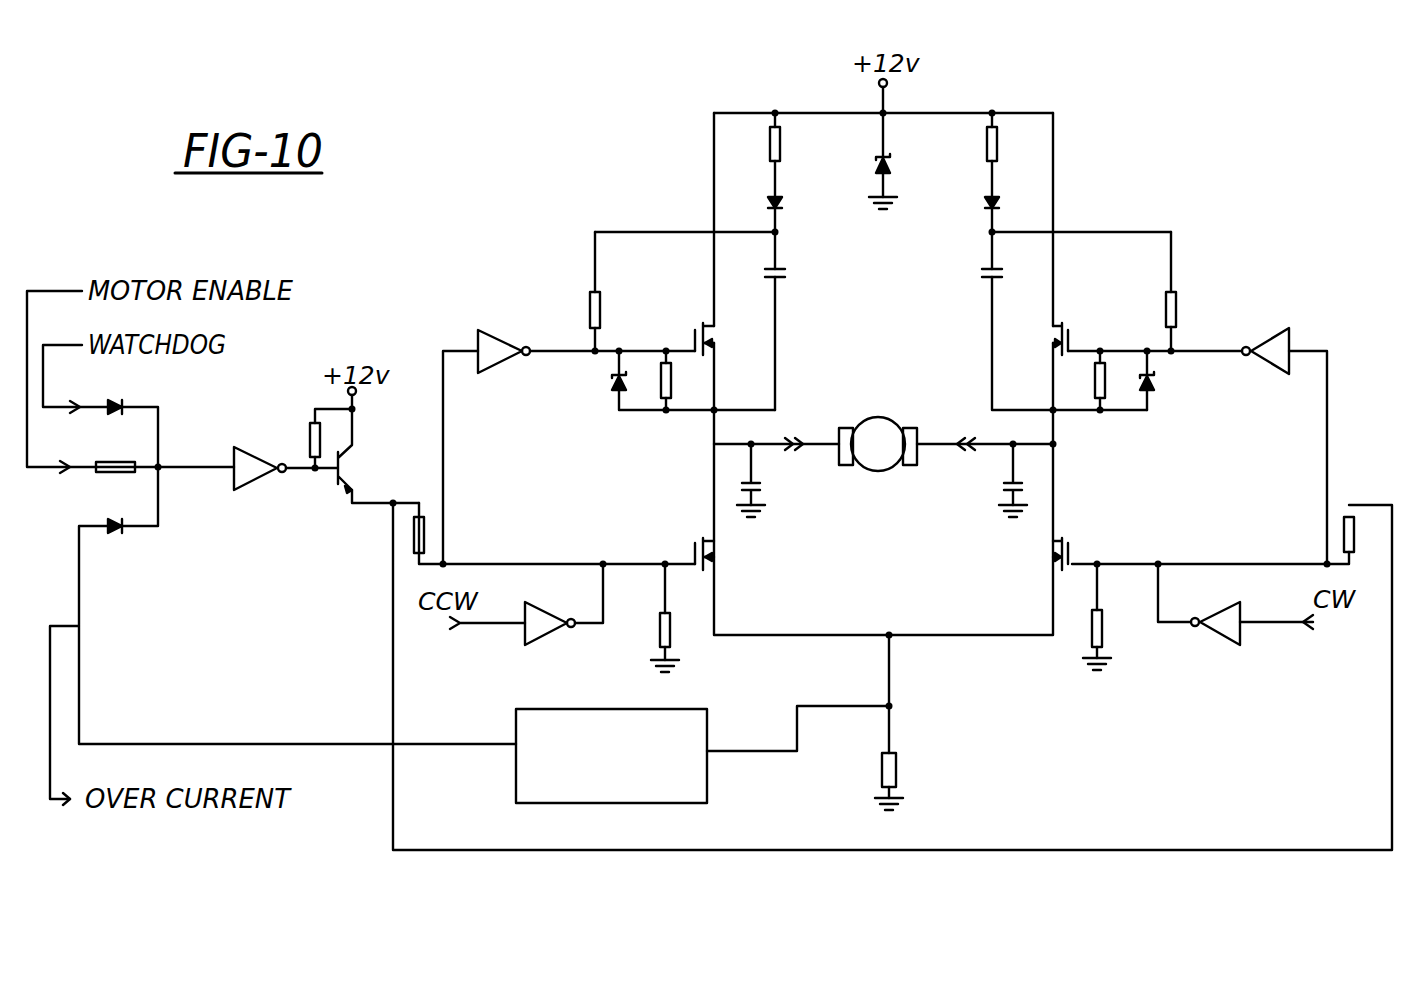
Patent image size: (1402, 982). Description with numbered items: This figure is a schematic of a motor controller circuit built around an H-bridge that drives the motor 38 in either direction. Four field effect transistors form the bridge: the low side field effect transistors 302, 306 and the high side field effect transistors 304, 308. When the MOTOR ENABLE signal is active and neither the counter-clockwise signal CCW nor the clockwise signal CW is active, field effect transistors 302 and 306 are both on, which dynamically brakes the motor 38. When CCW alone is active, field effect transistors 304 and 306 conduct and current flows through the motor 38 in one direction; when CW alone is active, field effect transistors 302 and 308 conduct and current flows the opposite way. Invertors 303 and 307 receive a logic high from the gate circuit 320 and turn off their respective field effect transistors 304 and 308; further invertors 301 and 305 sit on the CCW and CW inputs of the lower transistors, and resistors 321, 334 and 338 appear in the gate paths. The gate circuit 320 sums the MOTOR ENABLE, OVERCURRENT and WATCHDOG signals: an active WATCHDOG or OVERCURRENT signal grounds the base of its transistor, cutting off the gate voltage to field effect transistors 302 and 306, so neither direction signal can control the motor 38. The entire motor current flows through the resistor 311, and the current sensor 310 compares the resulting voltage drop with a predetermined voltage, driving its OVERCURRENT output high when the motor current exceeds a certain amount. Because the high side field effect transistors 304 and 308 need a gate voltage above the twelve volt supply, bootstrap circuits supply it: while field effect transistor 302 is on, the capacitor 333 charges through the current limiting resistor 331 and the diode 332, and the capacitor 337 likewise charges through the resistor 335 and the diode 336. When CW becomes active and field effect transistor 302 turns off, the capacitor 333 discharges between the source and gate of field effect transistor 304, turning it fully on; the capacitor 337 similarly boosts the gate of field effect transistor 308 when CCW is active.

The motor 38 is at (896, 424).
The inverter 301 is at (547, 618).
The field effect transistor 302 is at (693, 554).
The inverter 303 is at (497, 336).
The field effect transistor 304 is at (693, 336).
The inverter 305 is at (1216, 613).
The field effect transistor 306 is at (1075, 554).
The inverter 307 is at (1267, 345).
The field effect transistor 308 is at (1075, 337).
The current sensor 310 is at (639, 803).
The resistor 311 is at (897, 770).
The gate circuit 320 is at (253, 455).
The resistor 321 is at (129, 462).
The current limiting resistor 331 is at (781, 148).
The diode 332 is at (783, 202).
The capacitor 333 is at (787, 275).
The resistor 334 is at (589, 307).
The resistor 335 is at (984, 151).
The diode 336 is at (985, 205).
The capacitor 337 is at (981, 274).
The resistor 338 is at (1179, 306).